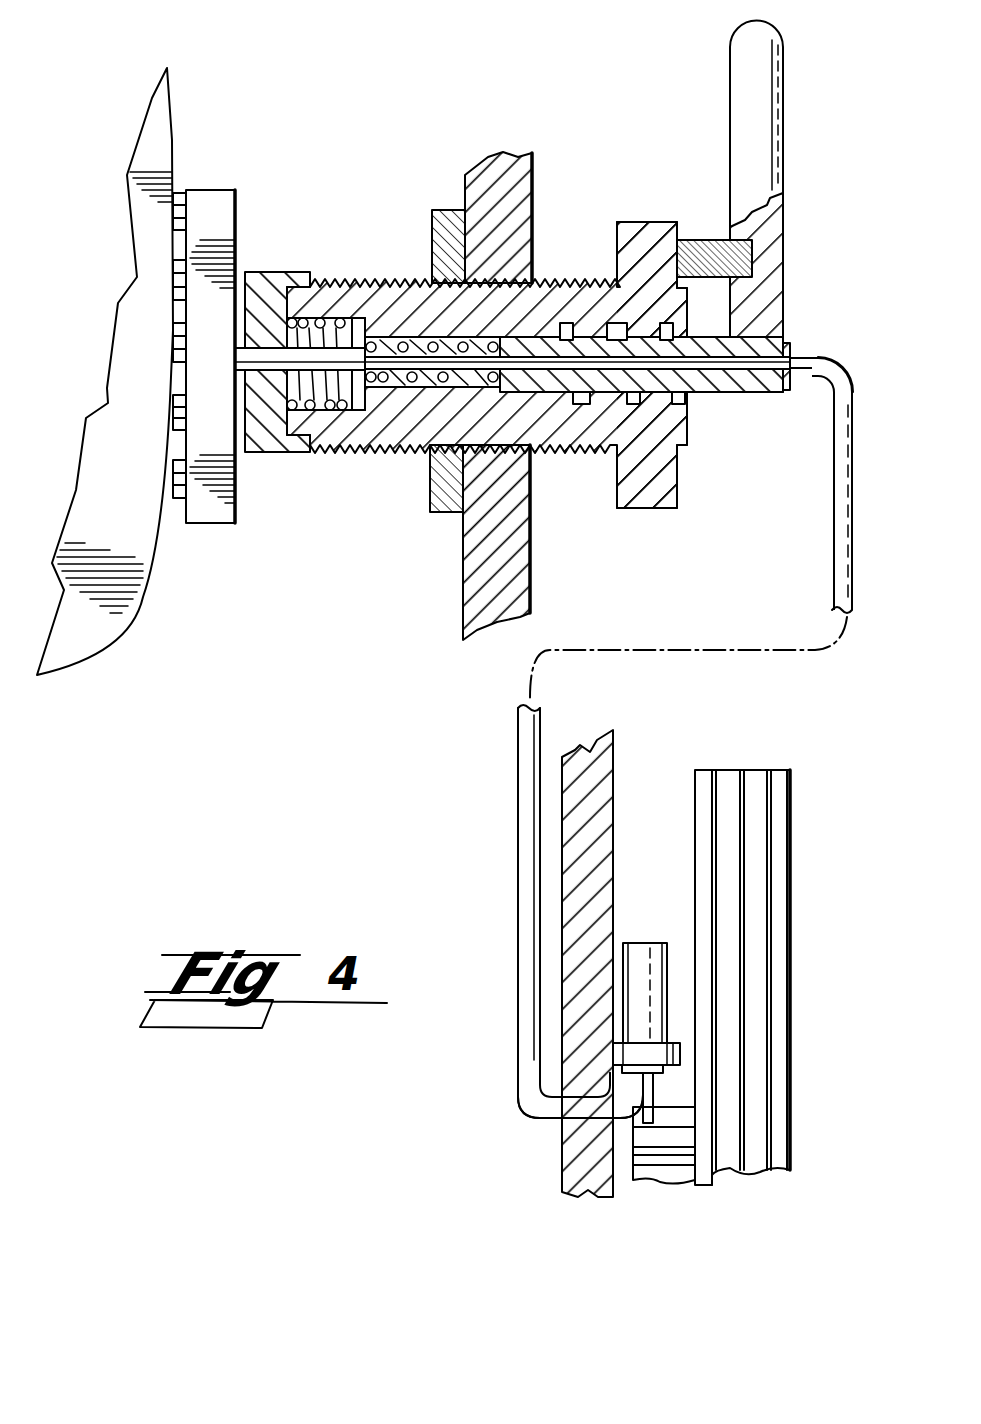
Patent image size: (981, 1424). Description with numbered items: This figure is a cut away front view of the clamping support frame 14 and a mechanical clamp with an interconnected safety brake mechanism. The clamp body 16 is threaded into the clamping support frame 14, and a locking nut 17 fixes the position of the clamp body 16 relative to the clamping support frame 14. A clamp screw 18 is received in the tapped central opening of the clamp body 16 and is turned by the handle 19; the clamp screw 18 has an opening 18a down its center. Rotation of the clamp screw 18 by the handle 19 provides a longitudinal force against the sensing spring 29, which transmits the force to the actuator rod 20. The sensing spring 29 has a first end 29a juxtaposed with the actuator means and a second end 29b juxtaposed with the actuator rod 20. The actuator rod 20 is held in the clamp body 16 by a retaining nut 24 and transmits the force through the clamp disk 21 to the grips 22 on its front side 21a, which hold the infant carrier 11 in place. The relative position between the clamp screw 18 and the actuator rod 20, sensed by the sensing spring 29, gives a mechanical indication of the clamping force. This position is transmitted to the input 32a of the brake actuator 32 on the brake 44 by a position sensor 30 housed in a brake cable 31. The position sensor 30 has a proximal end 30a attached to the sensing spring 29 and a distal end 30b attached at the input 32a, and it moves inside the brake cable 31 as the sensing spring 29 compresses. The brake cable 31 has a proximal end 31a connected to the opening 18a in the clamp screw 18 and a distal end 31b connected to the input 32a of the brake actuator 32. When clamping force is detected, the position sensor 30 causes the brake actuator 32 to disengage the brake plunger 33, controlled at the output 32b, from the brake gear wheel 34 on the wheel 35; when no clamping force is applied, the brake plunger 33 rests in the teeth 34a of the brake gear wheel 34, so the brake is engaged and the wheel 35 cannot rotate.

The infant carrier 11 is at (103, 647).
The clamping support frame 14 is at (507, 153).
The clamp body 16 is at (680, 487).
The locking nut 17 is at (443, 207).
The clamp screw 18 is at (710, 393).
The opening 18a is at (777, 285).
The handle 19 is at (783, 93).
The actuator rod 20 is at (283, 366).
The clamp disk 21 is at (230, 530).
The front side 21a is at (352, 322).
The grips 22 is at (176, 503).
The retaining nut 24 is at (270, 450).
The sensing spring 29 is at (440, 355).
The first end 29a is at (483, 380).
The second end 29b is at (373, 345).
The position sensor 30 is at (358, 443).
The proximal end 30a is at (342, 415).
The distal end 30b is at (612, 1068).
The brake cable 31 is at (833, 500).
The proximal end 31a is at (822, 355).
The distal end 31b is at (640, 1047).
The brake actuator 32 is at (645, 955).
The input 32a is at (650, 1050).
The output 32b is at (678, 1062).
The brake plunger 33 is at (655, 1100).
The brake gear wheel 34 is at (655, 1183).
The teeth 34a is at (658, 1160).
The wheel 35 is at (752, 770).
The brake 44 is at (661, 752).